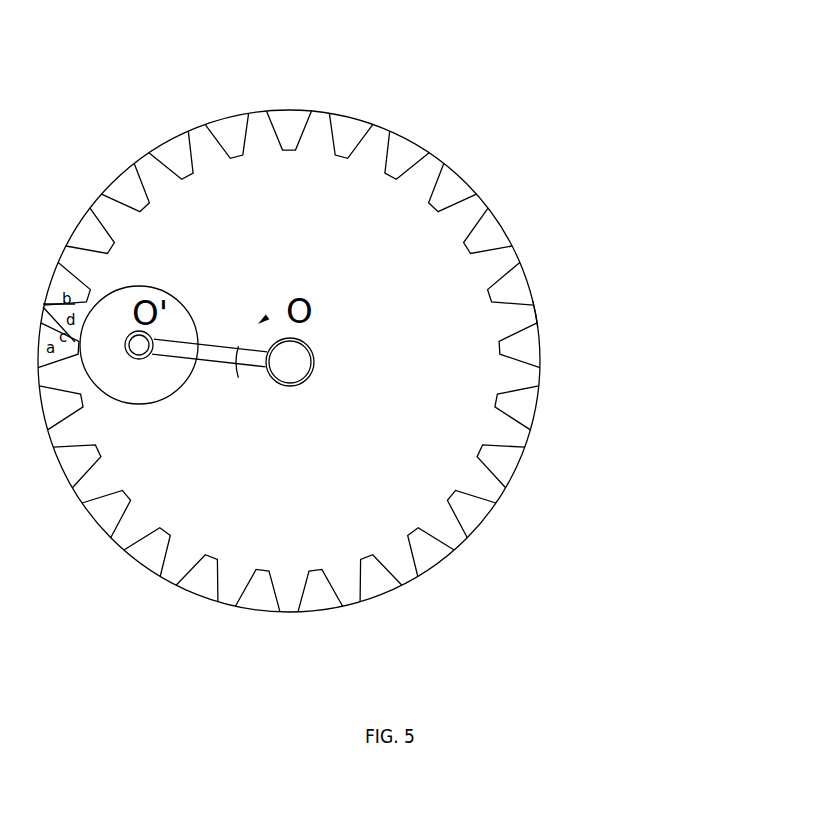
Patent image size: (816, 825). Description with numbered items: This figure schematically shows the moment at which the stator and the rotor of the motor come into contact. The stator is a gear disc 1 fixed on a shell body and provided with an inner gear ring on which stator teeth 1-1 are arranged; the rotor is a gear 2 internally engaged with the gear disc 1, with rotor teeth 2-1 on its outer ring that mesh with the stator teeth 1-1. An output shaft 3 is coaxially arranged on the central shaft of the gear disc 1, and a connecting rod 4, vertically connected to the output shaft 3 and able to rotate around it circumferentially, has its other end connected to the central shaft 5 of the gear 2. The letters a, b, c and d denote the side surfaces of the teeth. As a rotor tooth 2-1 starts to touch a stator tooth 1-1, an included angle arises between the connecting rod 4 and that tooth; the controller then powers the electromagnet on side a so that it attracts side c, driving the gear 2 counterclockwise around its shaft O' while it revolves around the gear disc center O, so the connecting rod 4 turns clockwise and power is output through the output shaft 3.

The gear disc 1 is at (442, 458).
The stator teeth 1-1 is at (492, 292).
The gear 2 is at (100, 330).
The rotor teeth 2-1 is at (80, 313).
The output shaft 3 is at (270, 353).
The connecting rod 4 is at (220, 353).
The central shaft 5 is at (147, 341).